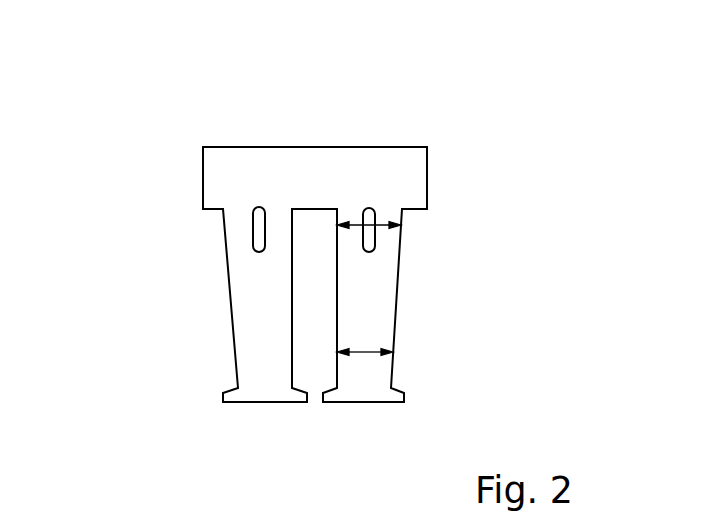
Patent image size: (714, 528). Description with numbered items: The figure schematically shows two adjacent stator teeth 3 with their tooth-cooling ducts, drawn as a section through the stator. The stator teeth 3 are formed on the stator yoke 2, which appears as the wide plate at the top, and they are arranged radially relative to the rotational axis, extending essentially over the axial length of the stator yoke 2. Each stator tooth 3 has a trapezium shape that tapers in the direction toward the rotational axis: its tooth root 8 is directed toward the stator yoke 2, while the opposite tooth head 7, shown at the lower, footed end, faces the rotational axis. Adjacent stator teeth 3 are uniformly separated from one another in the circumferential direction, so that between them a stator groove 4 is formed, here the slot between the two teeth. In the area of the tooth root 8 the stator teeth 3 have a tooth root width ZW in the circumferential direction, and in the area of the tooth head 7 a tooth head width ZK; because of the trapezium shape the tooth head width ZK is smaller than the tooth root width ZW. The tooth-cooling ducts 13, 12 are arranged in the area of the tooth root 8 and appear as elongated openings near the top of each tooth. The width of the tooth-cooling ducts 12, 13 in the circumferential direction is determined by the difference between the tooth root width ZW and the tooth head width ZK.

The stator tooth 3 is at (203, 116).
The stator yoke 2 is at (235, 187).
The stator groove 4 is at (325, 363).
The tooth head 7 is at (363, 330).
The tooth root 8 is at (397, 210).
The tooth-cooling duct 12 is at (362, 242).
The tooth-cooling duct 13 is at (252, 235).
The tooth root width ZW is at (357, 225).
The tooth head width ZK is at (365, 353).